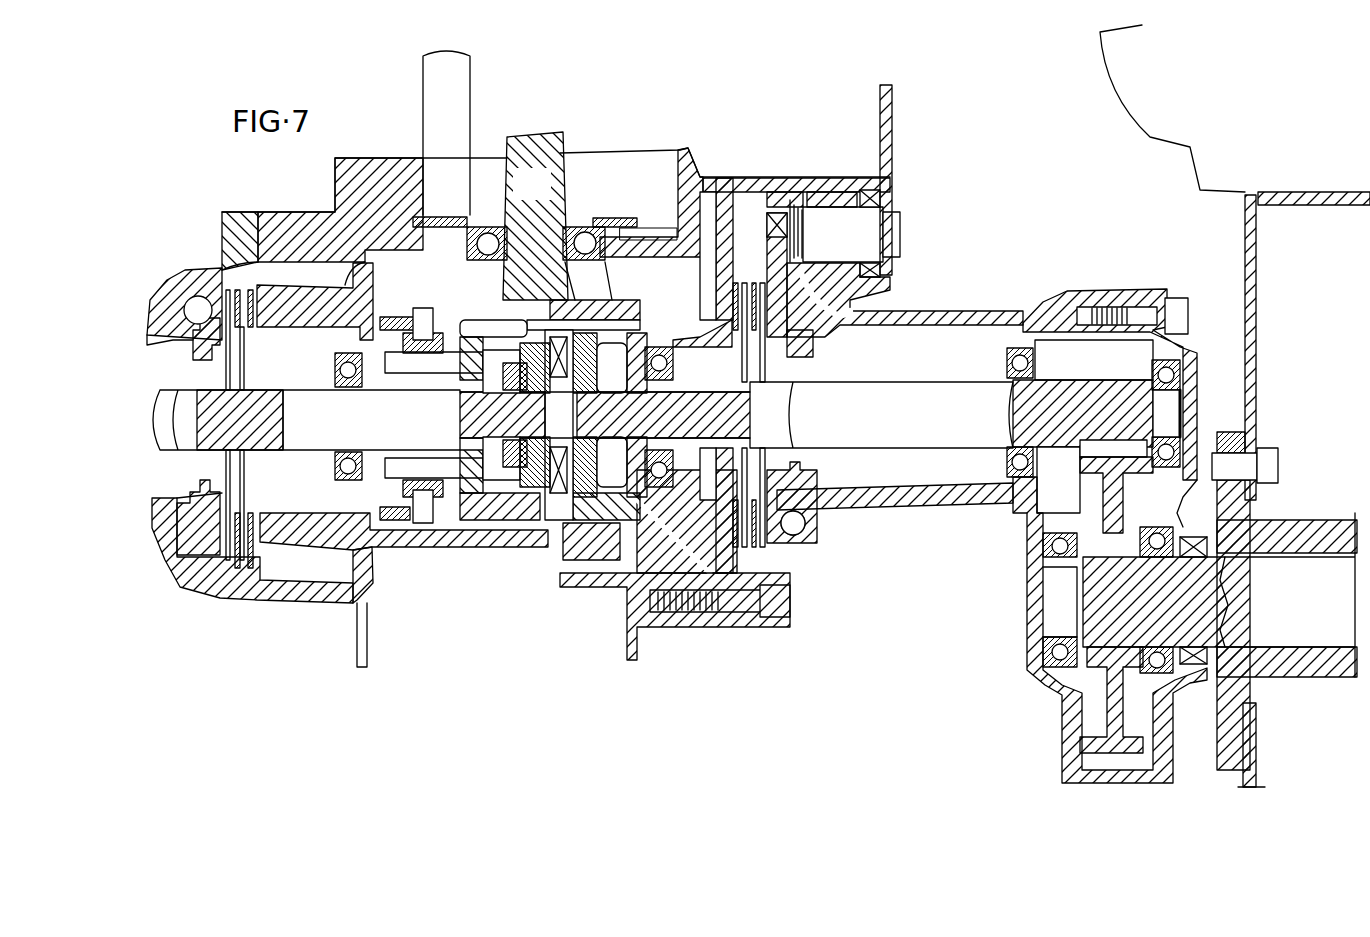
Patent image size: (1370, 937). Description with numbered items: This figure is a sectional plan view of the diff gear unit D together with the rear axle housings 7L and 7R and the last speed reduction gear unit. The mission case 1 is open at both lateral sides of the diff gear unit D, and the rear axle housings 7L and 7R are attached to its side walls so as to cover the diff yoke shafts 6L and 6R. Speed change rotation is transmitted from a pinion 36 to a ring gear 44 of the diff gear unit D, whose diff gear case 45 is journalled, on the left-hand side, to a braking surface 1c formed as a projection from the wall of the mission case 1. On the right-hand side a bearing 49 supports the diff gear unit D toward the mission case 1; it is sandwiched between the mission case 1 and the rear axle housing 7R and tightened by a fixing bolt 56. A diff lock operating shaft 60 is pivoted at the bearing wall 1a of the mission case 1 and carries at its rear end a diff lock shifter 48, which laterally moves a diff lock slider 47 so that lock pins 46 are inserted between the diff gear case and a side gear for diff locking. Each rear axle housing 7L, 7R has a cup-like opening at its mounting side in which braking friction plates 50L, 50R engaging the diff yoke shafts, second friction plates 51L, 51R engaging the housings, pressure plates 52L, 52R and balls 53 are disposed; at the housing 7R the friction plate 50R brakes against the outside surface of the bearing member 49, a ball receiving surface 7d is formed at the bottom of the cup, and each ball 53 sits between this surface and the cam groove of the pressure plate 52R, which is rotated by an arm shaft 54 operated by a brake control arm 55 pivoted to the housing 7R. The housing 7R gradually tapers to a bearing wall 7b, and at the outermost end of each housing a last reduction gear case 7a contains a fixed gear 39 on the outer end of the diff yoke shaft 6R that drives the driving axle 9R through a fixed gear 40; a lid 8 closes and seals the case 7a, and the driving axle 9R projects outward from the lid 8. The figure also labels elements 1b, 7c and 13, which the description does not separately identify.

The mission case 1 is at (655, 162).
The bearing wall 1a is at (690, 212).
The housing lower wall 1b is at (443, 548).
The braking surface 1c is at (305, 315).
The diff yoke shaft 6L is at (375, 437).
The diff yoke shaft 6R is at (923, 432).
The rear axle housing 7L is at (192, 270).
The rear axle housing 7R is at (988, 311).
The last reduction gear case 7a is at (1108, 300).
The bearing wall 7b is at (1005, 462).
The axle housing flange 7c is at (752, 612).
The ball receiving surface 7d is at (808, 520).
The lid 8 is at (1168, 768).
The driving axle 9R is at (1290, 628).
The input pinion shaft 13 is at (535, 216).
The pinion 36 is at (497, 268).
The fixed gear 39 is at (1093, 426).
The fixed gear 40 is at (1110, 762).
The ring gear 44 is at (580, 565).
The diff gear case 45 is at (508, 520).
The lock pins 46 is at (440, 392).
The diff lock slider 47 is at (405, 487).
The diff lock shifter 48 is at (390, 318).
The bearing 49 is at (715, 296).
The braking friction plate 50L is at (248, 360).
The braking friction plate 50R is at (752, 370).
The second friction plate 51L is at (250, 290).
The second friction plate 51R is at (752, 283).
The pressure plate 52L is at (196, 360).
The pressure plate 52R is at (815, 335).
The ball 53 is at (183, 302).
The arm shaft 54 is at (845, 233).
The brake control arm 55 is at (893, 108).
The fixing bolt 56 is at (790, 605).
The diff lock operating shaft 60 is at (455, 126).
The diff gear unit D is at (547, 565).